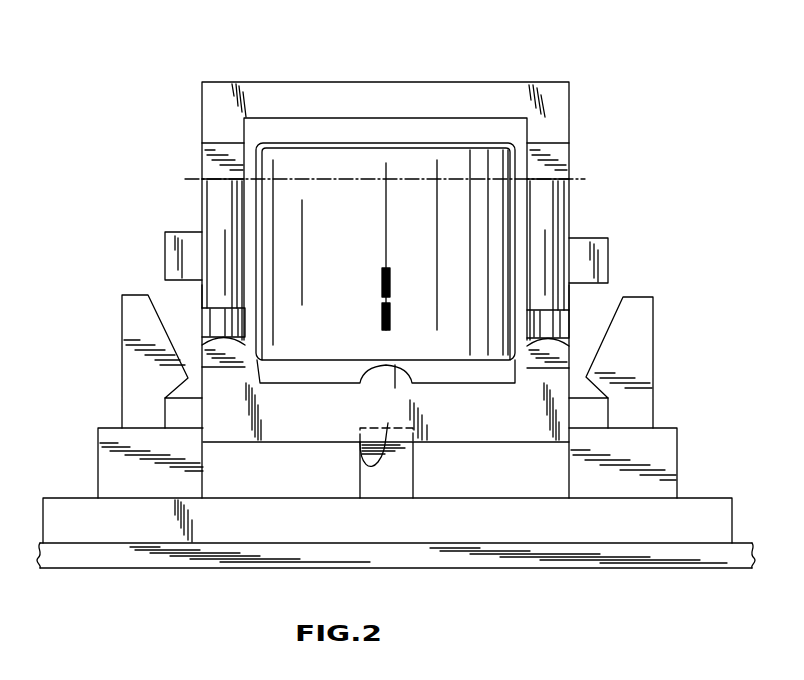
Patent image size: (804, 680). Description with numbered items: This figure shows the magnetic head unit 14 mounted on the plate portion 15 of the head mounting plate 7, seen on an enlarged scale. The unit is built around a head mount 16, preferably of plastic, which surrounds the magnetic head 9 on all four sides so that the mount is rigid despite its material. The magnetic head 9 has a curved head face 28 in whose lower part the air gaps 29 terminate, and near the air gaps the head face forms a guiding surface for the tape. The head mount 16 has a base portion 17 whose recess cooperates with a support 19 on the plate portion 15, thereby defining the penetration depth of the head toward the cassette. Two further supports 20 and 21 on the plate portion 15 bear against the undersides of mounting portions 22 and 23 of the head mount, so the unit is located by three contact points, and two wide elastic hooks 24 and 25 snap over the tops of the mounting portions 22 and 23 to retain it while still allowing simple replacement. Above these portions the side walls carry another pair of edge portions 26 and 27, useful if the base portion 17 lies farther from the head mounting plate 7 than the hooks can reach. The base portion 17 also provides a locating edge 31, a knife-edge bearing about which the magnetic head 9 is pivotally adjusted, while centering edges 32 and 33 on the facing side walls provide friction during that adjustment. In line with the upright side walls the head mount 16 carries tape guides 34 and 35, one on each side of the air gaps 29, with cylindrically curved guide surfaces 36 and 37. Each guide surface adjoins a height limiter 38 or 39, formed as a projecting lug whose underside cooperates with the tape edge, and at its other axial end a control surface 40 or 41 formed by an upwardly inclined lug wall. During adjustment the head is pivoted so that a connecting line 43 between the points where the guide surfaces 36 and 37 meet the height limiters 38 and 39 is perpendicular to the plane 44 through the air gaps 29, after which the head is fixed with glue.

The magnetic head unit 14 is at (424, 46).
The head mount 16 is at (548, 92).
The height limiter 39 is at (208, 166).
The height limiter 38 is at (566, 158).
The guide surface 37 is at (210, 210).
The guide surface 36 is at (572, 234).
The edge portion 27 is at (172, 252).
The edge portion 26 is at (604, 272).
The control surface 41 is at (245, 322).
The control surface 40 is at (528, 324).
The centering edge 33 is at (252, 365).
The centering edge 32 is at (519, 358).
The tape guide 35 is at (201, 306).
The tape guide 34 is at (574, 300).
The head face 28 is at (435, 267).
The magnetic head 9 is at (490, 218).
The connecting line 43 is at (350, 180).
The plane 44 is at (386, 220).
The air gaps 29 is at (382, 311).
The locating edge 31 is at (379, 365).
The elastic hook 25 is at (132, 366).
The elastic hook 24 is at (643, 353).
The mounting portion 23 is at (182, 410).
The mounting portion 22 is at (598, 412).
The support 21 is at (105, 463).
The support 20 is at (667, 457).
The support 19 is at (405, 477).
The base portion 17 is at (364, 460).
The plate portion 15 is at (723, 517).
The head mounting plate 7 is at (732, 567).